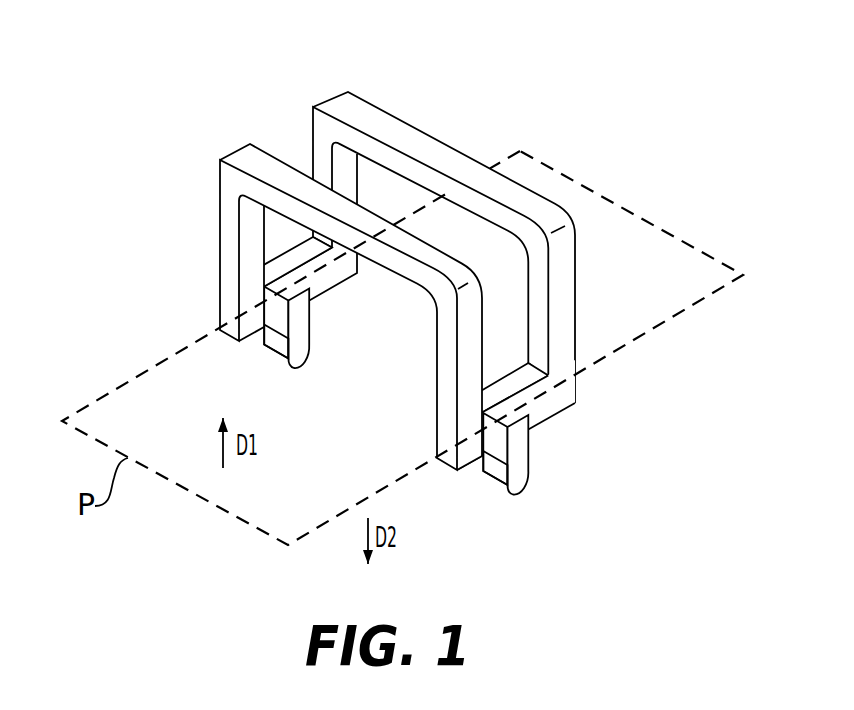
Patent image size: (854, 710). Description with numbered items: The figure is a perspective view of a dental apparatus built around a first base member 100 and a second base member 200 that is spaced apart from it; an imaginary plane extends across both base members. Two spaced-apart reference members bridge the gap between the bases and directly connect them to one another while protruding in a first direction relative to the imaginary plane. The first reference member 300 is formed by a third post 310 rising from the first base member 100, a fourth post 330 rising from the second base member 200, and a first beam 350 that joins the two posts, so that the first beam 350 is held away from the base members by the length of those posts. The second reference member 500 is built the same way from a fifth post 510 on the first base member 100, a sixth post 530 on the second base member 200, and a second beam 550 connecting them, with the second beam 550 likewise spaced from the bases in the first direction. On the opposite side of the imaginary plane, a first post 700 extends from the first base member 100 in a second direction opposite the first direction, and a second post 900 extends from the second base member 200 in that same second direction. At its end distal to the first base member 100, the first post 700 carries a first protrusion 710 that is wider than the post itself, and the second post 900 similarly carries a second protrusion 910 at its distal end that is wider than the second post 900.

The first base member 100 is at (350, 262).
The second base member 200 is at (543, 387).
The first reference member 300 is at (306, 248).
The third post 310 is at (220, 270).
The fourth post 330 is at (437, 412).
The first beam 350 is at (434, 300).
The second reference member 500 is at (484, 206).
The fifth post 510 is at (360, 181).
The sixth post 530 is at (563, 308).
The second beam 550 is at (514, 196).
The first post 700 is at (206, 328).
The first protrusion 710 is at (262, 346).
The second post 900 is at (524, 469).
The second protrusion 910 is at (497, 478).